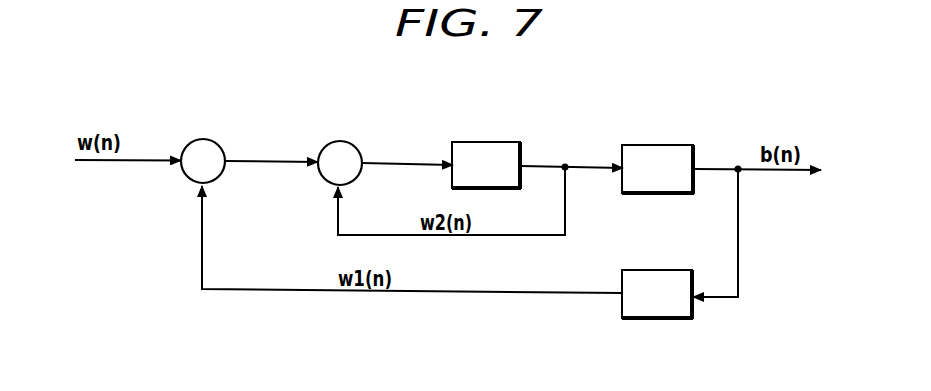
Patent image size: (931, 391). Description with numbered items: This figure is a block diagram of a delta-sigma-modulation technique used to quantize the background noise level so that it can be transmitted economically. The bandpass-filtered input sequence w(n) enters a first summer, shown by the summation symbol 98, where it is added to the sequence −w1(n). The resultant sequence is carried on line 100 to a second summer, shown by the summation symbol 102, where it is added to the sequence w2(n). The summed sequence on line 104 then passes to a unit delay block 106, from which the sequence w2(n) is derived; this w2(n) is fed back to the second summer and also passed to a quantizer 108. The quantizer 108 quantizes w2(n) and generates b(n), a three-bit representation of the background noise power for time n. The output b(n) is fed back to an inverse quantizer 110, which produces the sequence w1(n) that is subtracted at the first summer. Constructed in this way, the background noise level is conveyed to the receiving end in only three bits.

The summation symbol 98 is at (200, 139).
The line 100 is at (273, 165).
The summation symbol 102 is at (340, 141).
The line 104 is at (395, 163).
The unit delay block 106 is at (488, 142).
The quantizer 108 is at (657, 145).
The inverse quantizer 110 is at (657, 270).